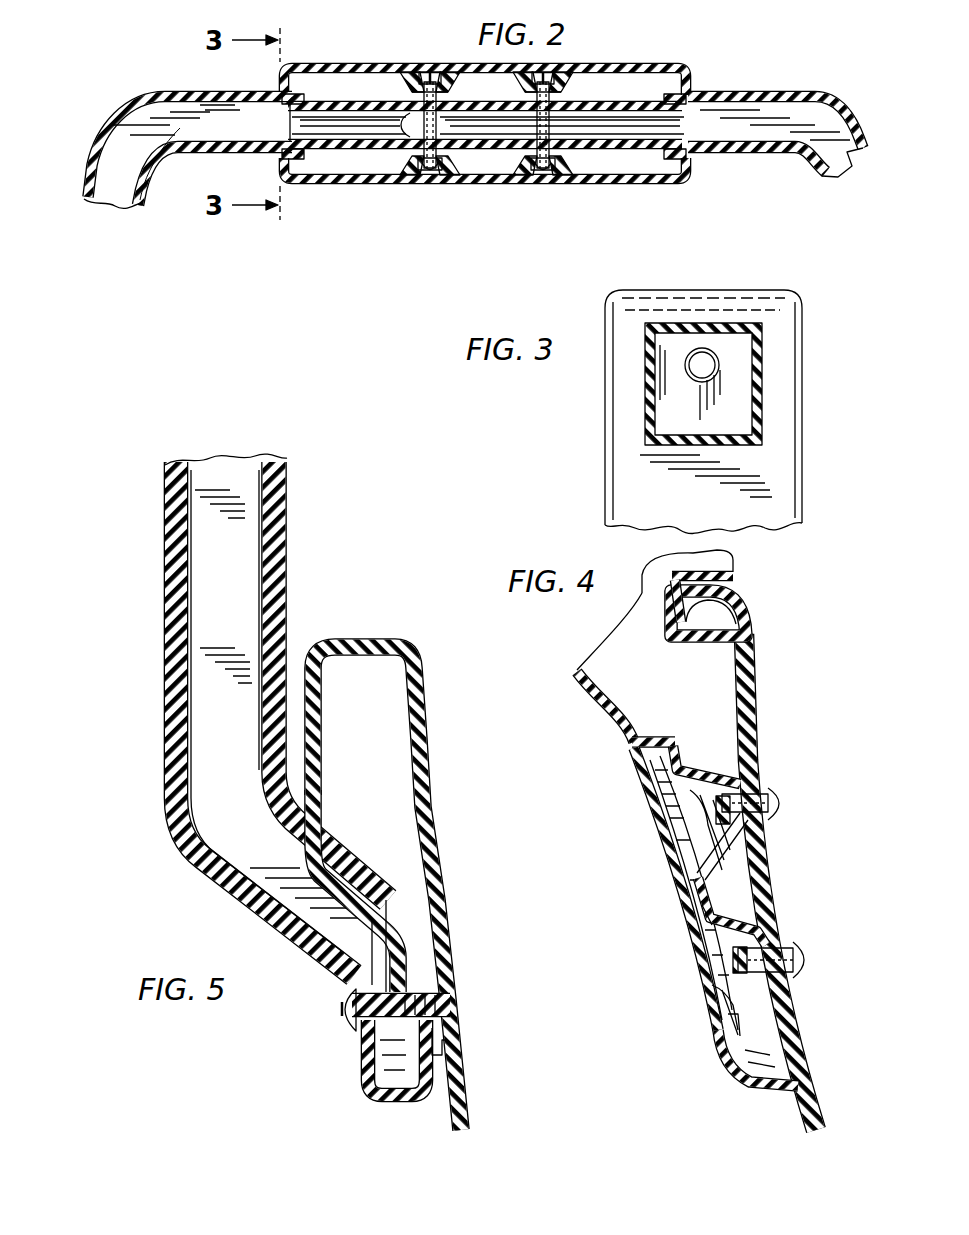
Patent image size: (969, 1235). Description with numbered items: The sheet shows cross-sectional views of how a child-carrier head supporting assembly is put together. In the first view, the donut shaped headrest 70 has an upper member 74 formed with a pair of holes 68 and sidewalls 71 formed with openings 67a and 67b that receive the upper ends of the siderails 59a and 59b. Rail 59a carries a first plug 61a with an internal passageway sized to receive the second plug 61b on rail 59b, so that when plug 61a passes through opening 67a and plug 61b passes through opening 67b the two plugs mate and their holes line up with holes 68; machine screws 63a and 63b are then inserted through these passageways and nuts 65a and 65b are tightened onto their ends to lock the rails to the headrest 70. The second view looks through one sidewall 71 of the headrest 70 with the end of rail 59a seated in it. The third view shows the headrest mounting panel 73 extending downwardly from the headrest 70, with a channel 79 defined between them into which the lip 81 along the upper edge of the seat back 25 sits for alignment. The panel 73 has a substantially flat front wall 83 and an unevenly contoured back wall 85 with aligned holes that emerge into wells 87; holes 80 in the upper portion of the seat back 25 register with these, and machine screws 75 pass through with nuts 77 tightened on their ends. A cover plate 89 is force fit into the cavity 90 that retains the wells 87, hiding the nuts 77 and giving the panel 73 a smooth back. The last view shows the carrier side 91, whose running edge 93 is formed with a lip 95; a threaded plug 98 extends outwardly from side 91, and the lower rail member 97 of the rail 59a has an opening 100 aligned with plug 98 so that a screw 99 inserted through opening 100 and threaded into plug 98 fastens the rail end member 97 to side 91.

In FIG. 4, the seat back 25 is at (759, 697).
In FIG. 2, the siderail 59a is at (105, 130).
In FIG. 3, the siderail 59a is at (770, 330).
In FIG. 5, the siderail 59a is at (283, 512).
In FIG. 2, the siderail 59b is at (808, 78).
In FIG. 2, the first plug 61a is at (328, 104).
In FIG. 2, the second plug 61b is at (633, 107).
In FIG. 2, the machine screw 63a is at (424, 184).
In FIG. 2, the machine screw 63b is at (545, 186).
In FIG. 2, the nut 65a is at (418, 68).
In FIG. 2, the nut 65b is at (563, 65).
In FIG. 2, the opening 67a is at (278, 90).
In FIG. 2, the opening 67b is at (700, 93).
In FIG. 2, the holes 68 is at (440, 184).
In FIG. 2, the headrest 70 is at (347, 62).
In FIG. 3, the headrest 70 is at (598, 425).
In FIG. 4, the headrest 70 is at (737, 558).
In FIG. 3, the sidewall 71 is at (640, 488).
In FIG. 4, the mounting panel 73 is at (727, 1078).
In FIG. 2, the upper member 74 is at (331, 185).
In FIG. 4, the machine screw 75 is at (780, 824).
In FIG. 4, the nut 77 is at (718, 778).
In FIG. 4, the channel 79 is at (672, 592).
In FIG. 4, the hole 80 is at (753, 796).
In FIG. 4, the lip 81 is at (708, 613).
In FIG. 4, the front wall 83 is at (740, 690).
In FIG. 4, the back wall 85 is at (722, 869).
In FIG. 4, the well 87 is at (705, 792).
In FIG. 4, the cover plate 89 is at (640, 777).
In FIG. 4, the cavity 90 is at (628, 746).
In FIG. 5, the side 91 is at (432, 812).
In FIG. 5, the running edge 93 is at (353, 648).
In FIG. 5, the lip 95 is at (322, 728).
In FIG. 5, the lower rail member 97 is at (365, 1070).
In FIG. 5, the threaded plug 98 is at (462, 1054).
In FIG. 5, the screw 99 is at (392, 985).
In FIG. 5, the opening 100 is at (350, 984).